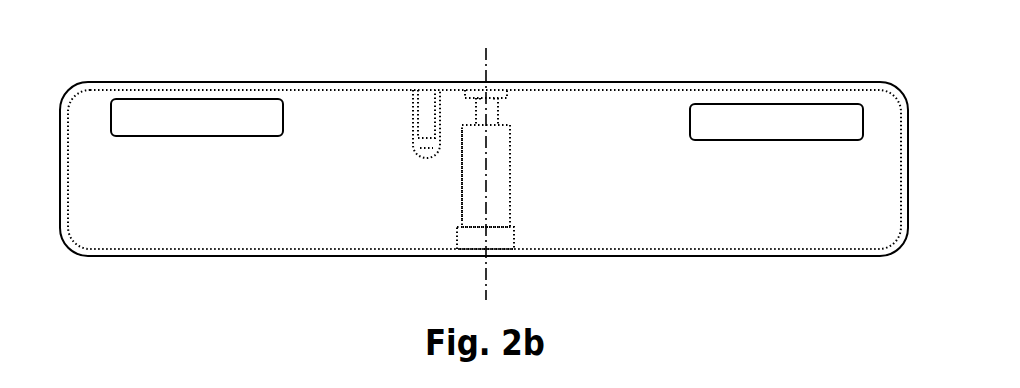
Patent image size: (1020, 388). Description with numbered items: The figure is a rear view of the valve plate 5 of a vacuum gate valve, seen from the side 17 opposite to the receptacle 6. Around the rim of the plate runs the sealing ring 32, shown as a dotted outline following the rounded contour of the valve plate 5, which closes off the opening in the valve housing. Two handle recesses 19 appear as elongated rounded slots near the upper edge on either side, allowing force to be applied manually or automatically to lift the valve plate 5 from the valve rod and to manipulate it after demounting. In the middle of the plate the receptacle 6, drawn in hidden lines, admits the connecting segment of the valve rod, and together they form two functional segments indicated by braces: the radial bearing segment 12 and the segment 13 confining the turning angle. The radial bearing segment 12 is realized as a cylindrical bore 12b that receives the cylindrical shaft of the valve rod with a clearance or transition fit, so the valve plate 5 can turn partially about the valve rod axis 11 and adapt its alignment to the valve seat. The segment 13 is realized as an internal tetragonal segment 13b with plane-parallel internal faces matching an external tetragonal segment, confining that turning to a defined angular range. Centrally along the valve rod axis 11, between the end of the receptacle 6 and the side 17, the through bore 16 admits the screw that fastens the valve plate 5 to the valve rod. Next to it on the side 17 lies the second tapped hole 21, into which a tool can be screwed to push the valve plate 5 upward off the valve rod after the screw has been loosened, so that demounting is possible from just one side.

The valve plate 5 is at (87, 68).
The receptacle 6 is at (547, 188).
The valve rod axis 11 is at (488, 62).
The radial bearing segment 12 is at (544, 125).
The cylindrical bore 12b is at (473, 170).
The segment confining the turning angle 13 is at (544, 227).
The internal tetragonal segment 13b is at (476, 243).
The through bore 16 is at (493, 117).
The side opposite to receptacle 17 is at (623, 83).
The handle recesses 19 is at (207, 110).
The second tapped hole 21 is at (425, 122).
The sealing ring 32 is at (293, 90).